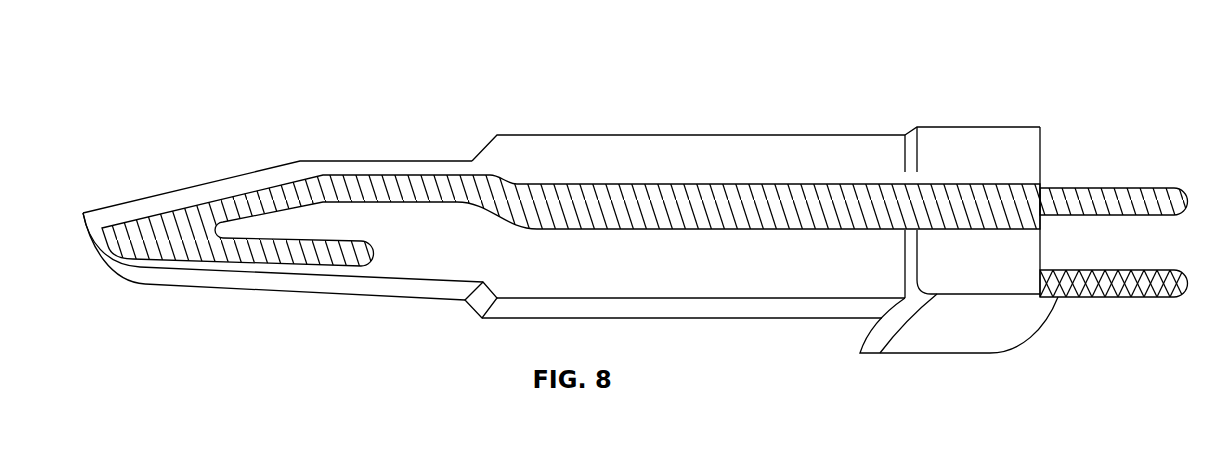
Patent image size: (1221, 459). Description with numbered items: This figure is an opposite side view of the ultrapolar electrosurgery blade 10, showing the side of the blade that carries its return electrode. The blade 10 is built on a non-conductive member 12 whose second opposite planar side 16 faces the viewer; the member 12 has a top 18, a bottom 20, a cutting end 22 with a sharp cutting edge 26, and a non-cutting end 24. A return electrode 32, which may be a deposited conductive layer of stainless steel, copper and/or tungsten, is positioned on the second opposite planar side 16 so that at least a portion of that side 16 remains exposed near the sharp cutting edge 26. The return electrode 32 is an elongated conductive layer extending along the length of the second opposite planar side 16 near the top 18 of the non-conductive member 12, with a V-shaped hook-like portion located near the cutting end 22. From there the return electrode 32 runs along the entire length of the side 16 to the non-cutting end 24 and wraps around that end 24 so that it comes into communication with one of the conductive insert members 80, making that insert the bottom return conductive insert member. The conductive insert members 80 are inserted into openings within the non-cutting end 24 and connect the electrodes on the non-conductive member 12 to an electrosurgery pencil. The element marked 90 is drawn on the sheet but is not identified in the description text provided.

The ultrapolar electrosurgery blade 10 is at (875, 77).
The non-conductive member 12 is at (537, 160).
The second opposite planar side 16 is at (668, 271).
The top 18 is at (733, 300).
The bottom 20 is at (793, 135).
The cutting end 22 is at (81, 213).
The non-cutting end 24 is at (1040, 247).
The sharp cutting edge 26 is at (175, 188).
The return electrode 32 is at (262, 198).
The conductive insert members 80 is at (1113, 188).
The strain relief tab 90 is at (960, 330).